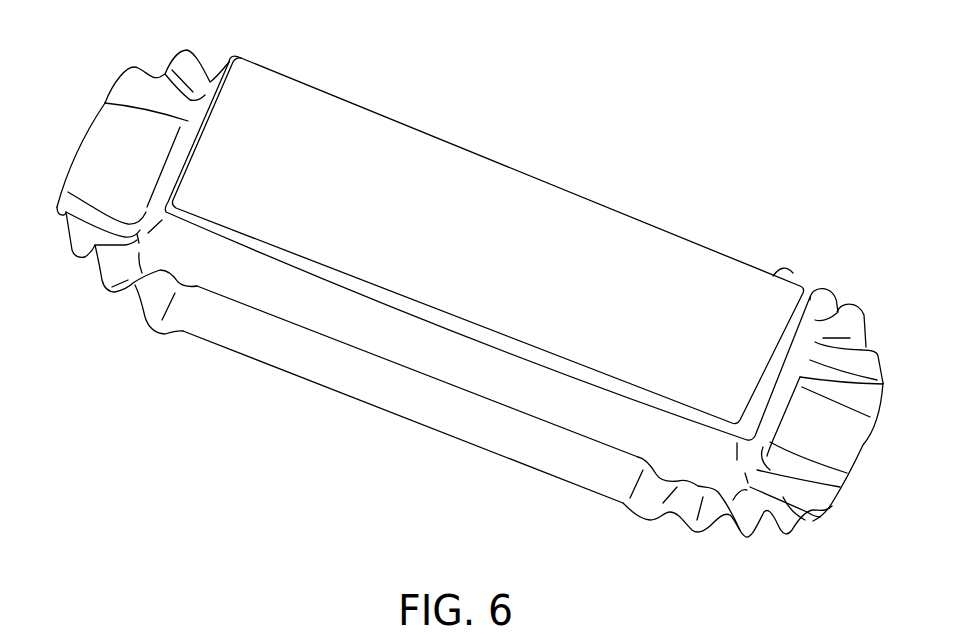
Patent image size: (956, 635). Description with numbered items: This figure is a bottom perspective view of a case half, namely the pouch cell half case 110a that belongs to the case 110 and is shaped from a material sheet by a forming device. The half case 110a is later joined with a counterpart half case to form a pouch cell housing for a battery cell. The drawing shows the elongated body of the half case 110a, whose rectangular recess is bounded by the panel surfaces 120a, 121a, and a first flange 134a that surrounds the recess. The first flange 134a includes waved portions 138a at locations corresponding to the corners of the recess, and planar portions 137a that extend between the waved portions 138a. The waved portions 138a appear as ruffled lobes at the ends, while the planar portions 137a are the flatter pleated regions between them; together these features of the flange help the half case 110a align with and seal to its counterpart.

The case 110 is at (474, 292).
The pouch cell half case 110a is at (474, 292).
The frame 120a is at (604, 213).
The panel face 121a is at (695, 250).
The first flange 134a is at (318, 375).
The planar portions 137a is at (90, 147).
The waved portions 138a is at (182, 55).